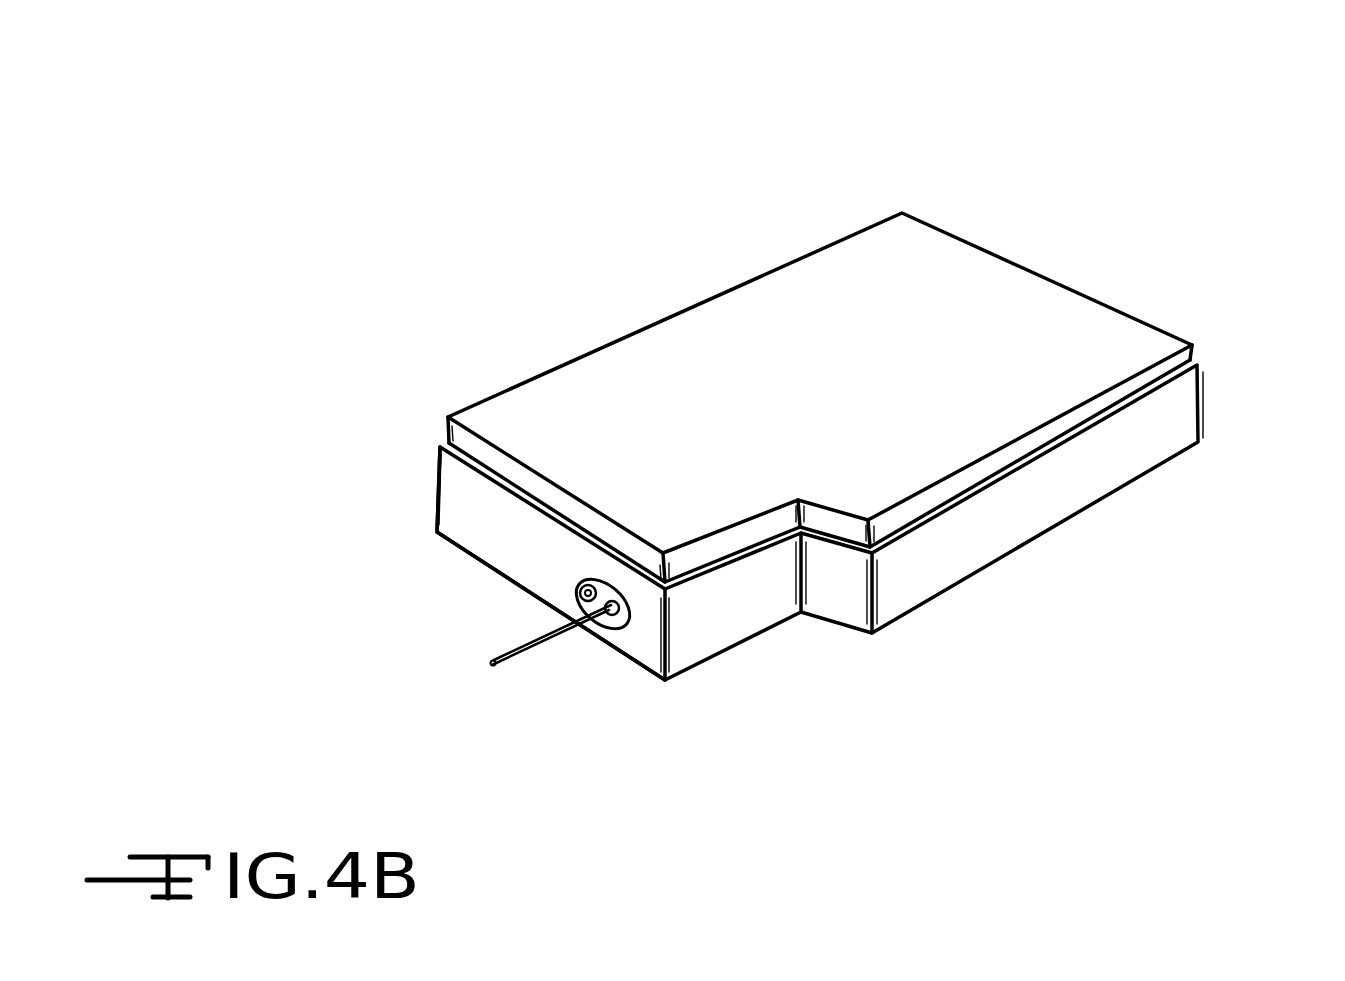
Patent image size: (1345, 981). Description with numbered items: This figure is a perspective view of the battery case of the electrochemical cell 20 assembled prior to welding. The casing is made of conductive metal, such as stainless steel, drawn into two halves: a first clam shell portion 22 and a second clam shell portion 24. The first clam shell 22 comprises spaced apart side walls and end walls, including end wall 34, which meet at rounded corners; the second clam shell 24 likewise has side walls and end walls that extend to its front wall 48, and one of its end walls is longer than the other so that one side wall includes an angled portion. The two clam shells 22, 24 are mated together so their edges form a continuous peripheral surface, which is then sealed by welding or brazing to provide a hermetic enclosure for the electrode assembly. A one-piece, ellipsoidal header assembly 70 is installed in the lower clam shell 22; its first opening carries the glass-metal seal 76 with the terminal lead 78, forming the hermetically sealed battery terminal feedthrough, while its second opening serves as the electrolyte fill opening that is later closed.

The electrochemical cell 20 is at (952, 92).
The first clam shell portion 22 is at (1200, 405).
The second clam shell portion 24 is at (1135, 332).
The end wall 34 is at (478, 525).
The front wall 48 is at (972, 280).
The one-piece header assembly 70 is at (577, 583).
The glass-metal seal 76 is at (627, 633).
The terminal lead 78 is at (490, 666).